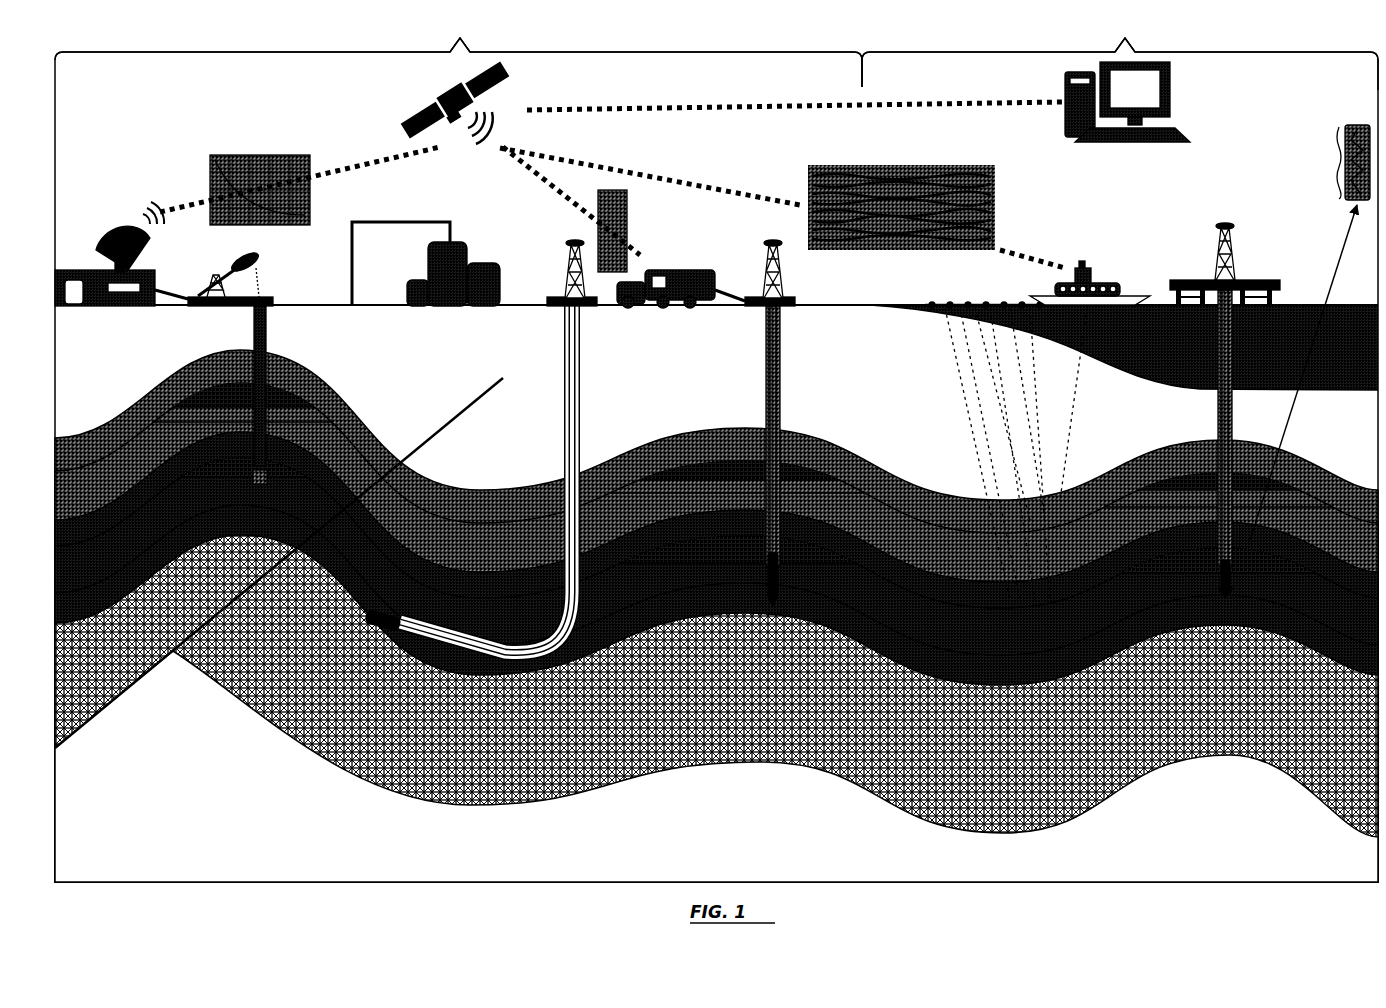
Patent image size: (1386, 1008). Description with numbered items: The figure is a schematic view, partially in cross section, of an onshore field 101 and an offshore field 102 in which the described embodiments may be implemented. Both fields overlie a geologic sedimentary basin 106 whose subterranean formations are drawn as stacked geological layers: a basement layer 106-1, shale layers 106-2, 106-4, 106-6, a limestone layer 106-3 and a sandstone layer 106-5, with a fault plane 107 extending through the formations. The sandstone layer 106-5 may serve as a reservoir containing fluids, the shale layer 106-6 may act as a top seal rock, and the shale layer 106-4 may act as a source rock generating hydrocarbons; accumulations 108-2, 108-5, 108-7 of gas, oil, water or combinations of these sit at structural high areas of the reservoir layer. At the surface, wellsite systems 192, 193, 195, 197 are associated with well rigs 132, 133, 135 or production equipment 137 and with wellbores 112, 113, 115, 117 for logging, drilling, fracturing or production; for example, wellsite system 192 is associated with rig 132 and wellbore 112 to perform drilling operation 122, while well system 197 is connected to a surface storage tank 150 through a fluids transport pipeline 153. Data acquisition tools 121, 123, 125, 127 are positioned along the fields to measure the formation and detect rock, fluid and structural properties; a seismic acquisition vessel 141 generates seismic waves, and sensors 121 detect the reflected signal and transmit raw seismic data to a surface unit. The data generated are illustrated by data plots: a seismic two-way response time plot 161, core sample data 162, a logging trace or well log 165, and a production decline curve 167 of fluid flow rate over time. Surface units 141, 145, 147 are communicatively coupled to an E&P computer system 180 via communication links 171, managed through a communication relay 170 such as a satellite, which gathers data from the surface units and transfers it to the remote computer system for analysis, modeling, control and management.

The onshore field 101 is at (459, 36).
The offshore field 102 is at (1125, 36).
The geologic sedimentary basin 106 is at (716, 766).
The basement layer 106-1 is at (716, 708).
The shale layer 106-2 is at (716, 693).
The limestone layer 106-3 is at (716, 670).
The shale layer 106-4 is at (716, 657).
The sandstone layer 106-5 is at (716, 632).
The shale layer 106-6 is at (716, 616).
The fault plane 107 is at (460, 415).
The accumulation 108-2 is at (1198, 470).
The accumulation 108-5 is at (800, 455).
The accumulation 108-7 is at (315, 395).
The wellbore 112 is at (1215, 400).
The wellbore 113 is at (583, 355).
The wellbore 115 is at (786, 358).
The wellbore 117 is at (270, 328).
The data acquisition tool 121 is at (990, 301).
The drilling operation 122 is at (1179, 588).
The data acquisition tool 123 is at (370, 624).
The data acquisition tool 125 is at (770, 604).
The data acquisition tool 127 is at (248, 464).
The rig 132 is at (1240, 253).
The well rig 133 is at (561, 264).
The well rig 135 is at (786, 283).
The production equipment 137 is at (258, 264).
The seismic acquisition vessel 141 is at (1103, 270).
The surface unit 145 is at (665, 262).
The surface unit 147 is at (68, 245).
The surface storage tank 150 is at (458, 236).
The fluids transport pipeline 153 is at (370, 222).
The static data plot 161 is at (935, 165).
The static data plot 162 is at (1338, 140).
The static data plot 165 is at (622, 175).
The production decline curve 167 is at (245, 150).
The communication relay 170 is at (445, 90).
The communication links 171 is at (335, 160).
The E&P computer system 180 is at (1178, 106).
The wellsite system 192 is at (1223, 234).
The wellsite system 193 is at (568, 256).
The wellsite system 195 is at (773, 260).
The wellsite system 197 is at (240, 254).